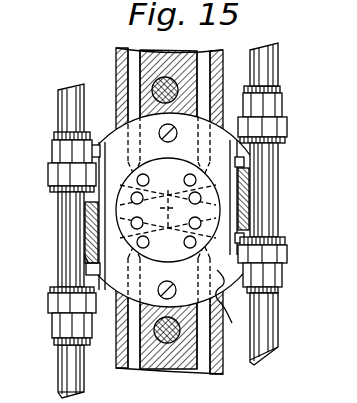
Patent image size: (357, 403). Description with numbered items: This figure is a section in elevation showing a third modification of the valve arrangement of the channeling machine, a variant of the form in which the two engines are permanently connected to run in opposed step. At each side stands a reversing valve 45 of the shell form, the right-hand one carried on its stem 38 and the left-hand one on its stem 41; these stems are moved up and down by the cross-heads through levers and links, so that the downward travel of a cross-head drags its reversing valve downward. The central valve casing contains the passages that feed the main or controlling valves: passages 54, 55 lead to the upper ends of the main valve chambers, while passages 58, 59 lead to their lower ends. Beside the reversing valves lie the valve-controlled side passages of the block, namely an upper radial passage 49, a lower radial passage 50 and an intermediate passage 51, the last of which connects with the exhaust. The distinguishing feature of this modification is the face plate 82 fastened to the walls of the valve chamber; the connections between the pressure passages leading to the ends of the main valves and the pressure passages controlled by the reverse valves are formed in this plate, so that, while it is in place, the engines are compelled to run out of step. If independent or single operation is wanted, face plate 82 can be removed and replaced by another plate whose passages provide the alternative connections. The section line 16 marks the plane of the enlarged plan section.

The section line 16— 16 is at (118, 208).
The stem 38 is at (270, 332).
The stem 41 is at (74, 380).
The reversing valve 45 is at (87, 235).
The upper radial passage 49 is at (72, 173).
The lower radial passage 50 is at (86, 253).
The intermediate passage 51 is at (72, 222).
The passage 54 is at (207, 68).
The passage 55 is at (134, 75).
The passage 58 is at (203, 363).
The passage 59 is at (134, 358).
The face plate 82 is at (232, 308).